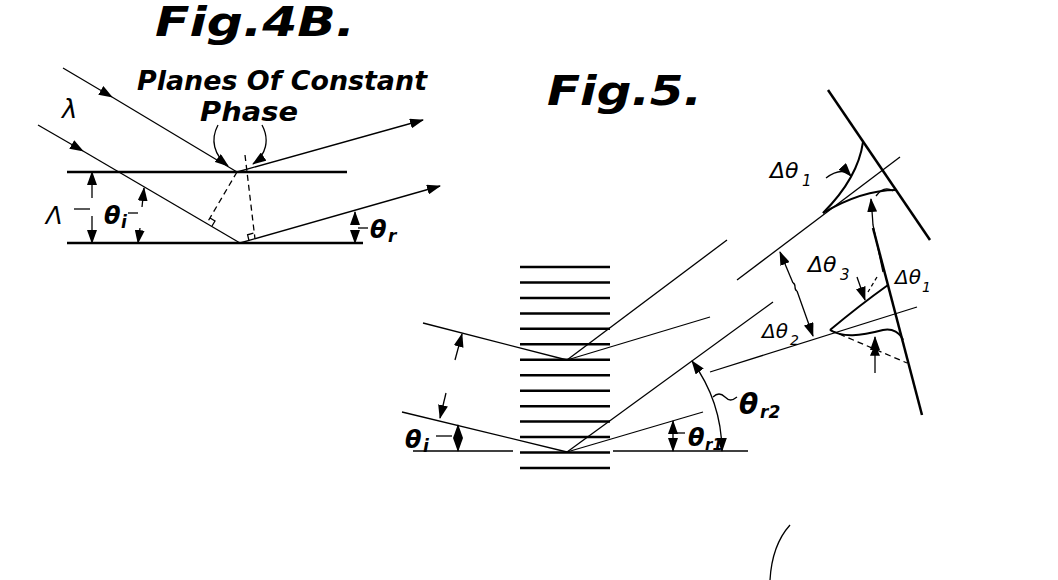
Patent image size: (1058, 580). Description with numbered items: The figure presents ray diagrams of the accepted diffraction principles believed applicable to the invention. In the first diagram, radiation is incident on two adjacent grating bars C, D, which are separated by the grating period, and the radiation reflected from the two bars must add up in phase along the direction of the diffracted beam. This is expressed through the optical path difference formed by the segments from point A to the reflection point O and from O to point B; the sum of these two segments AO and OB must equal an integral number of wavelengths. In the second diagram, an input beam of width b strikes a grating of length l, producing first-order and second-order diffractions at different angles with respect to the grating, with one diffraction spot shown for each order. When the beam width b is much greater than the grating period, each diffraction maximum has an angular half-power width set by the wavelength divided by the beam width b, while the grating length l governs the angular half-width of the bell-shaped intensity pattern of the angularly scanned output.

In FIG. 4B, the wavefront point A is at (205, 223).
In FIG. 4B, the wavefront point B is at (258, 244).
In FIG. 4B, the grating bar C is at (323, 244).
In FIG. 4B, the grating bar D is at (348, 172).
In FIG. 4B, the reflection point O is at (335, 228).
In FIG. 5, the beam width b is at (451, 376).
In FIG. 5, the grating length l is at (610, 477).